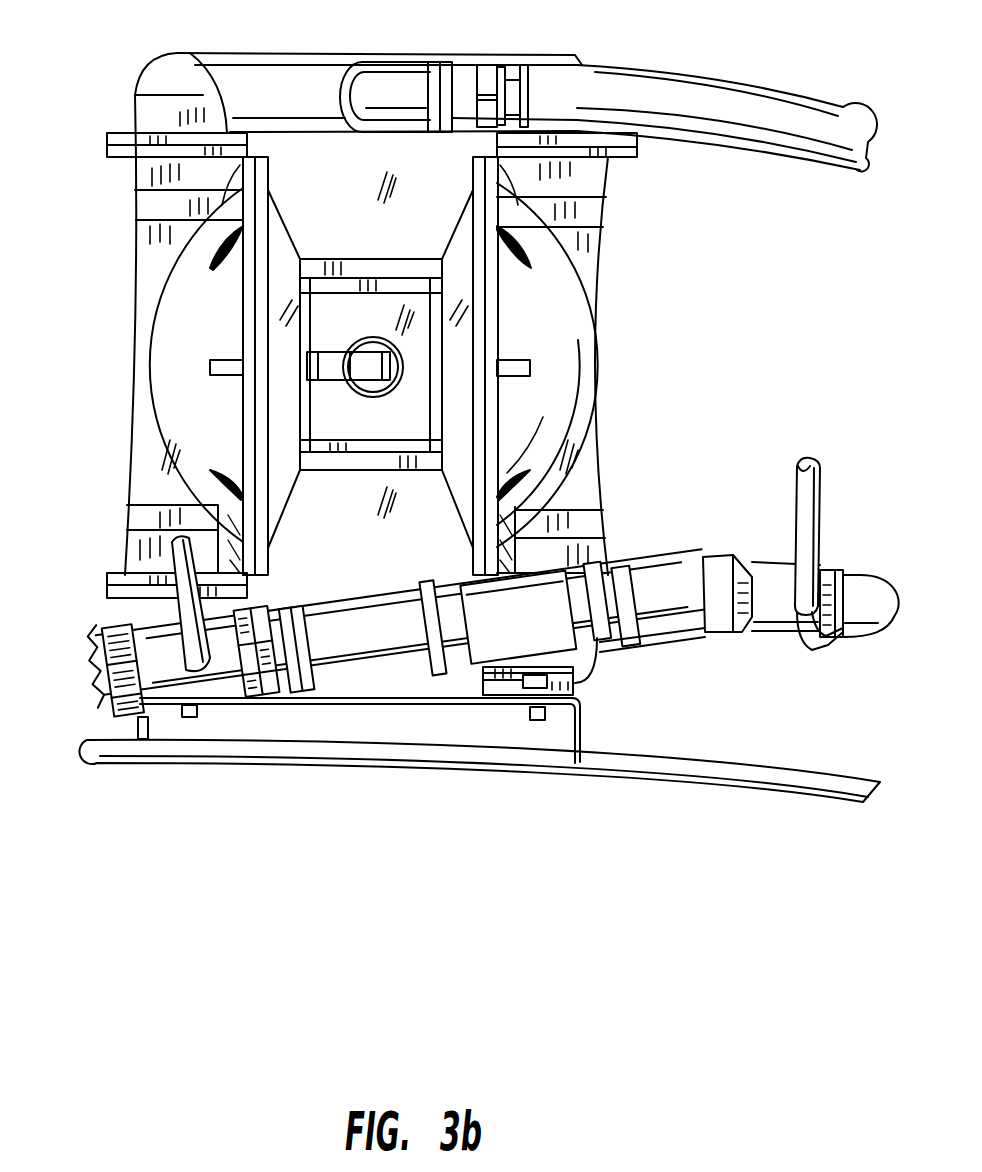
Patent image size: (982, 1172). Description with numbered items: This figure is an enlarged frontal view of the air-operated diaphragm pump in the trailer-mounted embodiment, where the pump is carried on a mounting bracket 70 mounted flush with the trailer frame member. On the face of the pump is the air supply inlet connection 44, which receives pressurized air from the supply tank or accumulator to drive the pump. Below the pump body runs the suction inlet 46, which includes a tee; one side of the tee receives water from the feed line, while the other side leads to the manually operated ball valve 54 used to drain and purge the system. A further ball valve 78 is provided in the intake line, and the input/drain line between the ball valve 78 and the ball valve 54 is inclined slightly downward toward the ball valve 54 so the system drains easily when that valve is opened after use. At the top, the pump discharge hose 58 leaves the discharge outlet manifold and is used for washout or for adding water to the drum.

The air supply inlet connection 44 is at (330, 362).
The suction inlet 46 is at (362, 663).
The manually operated ball valve 54 is at (153, 678).
The pump discharge hose 58 is at (637, 87).
The mounting bracket 70 is at (585, 708).
The ball valve 78 is at (768, 570).